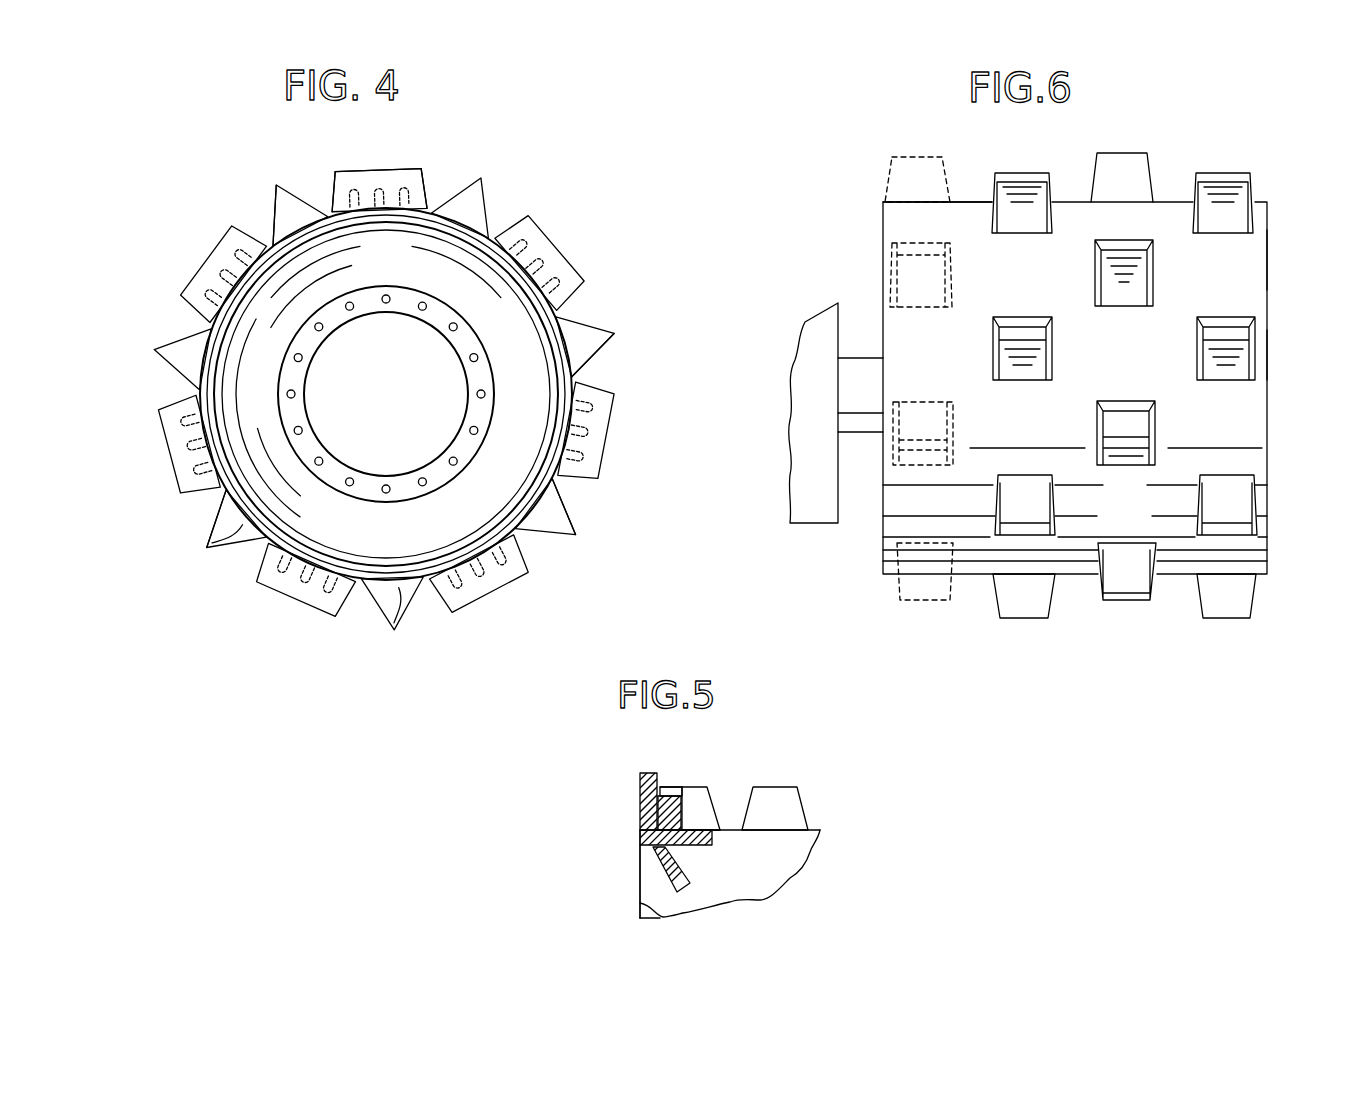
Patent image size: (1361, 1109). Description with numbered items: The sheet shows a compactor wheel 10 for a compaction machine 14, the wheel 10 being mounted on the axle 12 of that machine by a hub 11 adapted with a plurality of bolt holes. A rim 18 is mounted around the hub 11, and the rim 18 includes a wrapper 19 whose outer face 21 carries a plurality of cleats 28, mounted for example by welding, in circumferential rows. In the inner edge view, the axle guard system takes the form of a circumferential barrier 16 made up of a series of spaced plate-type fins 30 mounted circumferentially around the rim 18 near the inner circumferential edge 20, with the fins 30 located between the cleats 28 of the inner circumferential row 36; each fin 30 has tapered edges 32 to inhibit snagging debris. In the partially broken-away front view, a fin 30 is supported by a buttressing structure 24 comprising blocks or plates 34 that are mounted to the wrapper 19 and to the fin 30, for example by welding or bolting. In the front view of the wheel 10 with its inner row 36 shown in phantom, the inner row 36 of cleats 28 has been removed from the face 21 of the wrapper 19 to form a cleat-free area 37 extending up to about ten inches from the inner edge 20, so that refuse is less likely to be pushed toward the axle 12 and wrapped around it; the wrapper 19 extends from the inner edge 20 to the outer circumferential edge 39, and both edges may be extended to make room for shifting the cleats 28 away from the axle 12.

In FIG. 4, the compactor wheel 10 is at (585, 535).
In FIG. 5, the compactor wheel 10 is at (780, 777).
In FIG. 6, the compactor wheel 10 is at (1266, 578).
In FIG. 4, the hub 11 is at (432, 466).
In FIG. 6, the axle 12 is at (858, 436).
In FIG. 6, the compaction machine 14 is at (825, 318).
In FIG. 4, the circumferential barrier 16 is at (425, 150).
In FIG. 5, the circumferential barrier 16 is at (693, 752).
In FIG. 4, the rim 18 is at (385, 217).
In FIG. 5, the rim 18 is at (640, 860).
In FIG. 4, the wrapper 19 is at (235, 510).
In FIG. 5, the wrapper 19 is at (697, 840).
In FIG. 6, the wrapper 19 is at (1268, 258).
In FIG. 4, the inner circumferential edge 20 is at (197, 318).
In FIG. 5, the inner circumferential edge 20 is at (640, 836).
In FIG. 6, the inner circumferential edge 20 is at (882, 200).
In FIG. 4, the outer face 21 is at (218, 490).
In FIG. 5, the outer face 21 is at (741, 893).
In FIG. 6, the outer face 21 is at (1110, 511).
In FIG. 5, the buttressing structure 24 is at (683, 785).
In FIG. 4, the cleats 28 is at (478, 190).
In FIG. 5, the cleats 28 is at (745, 803).
In FIG. 6, the cleats 28 is at (1028, 187).
In FIG. 4, the plate-type barriers or fins 30 is at (347, 170).
In FIG. 5, the plate-type barriers or fins 30 is at (640, 773).
In FIG. 4, the tapered edges 32 is at (330, 183).
In FIG. 4, the blocks or plates 34 is at (353, 190).
In FIG. 5, the blocks or plates 34 is at (668, 795).
In FIG. 4, the inner circumferential row 36 is at (265, 215).
In FIG. 5, the inner circumferential row 36 is at (703, 817).
In FIG. 6, the inner circumferential row 36 is at (918, 165).
In FIG. 6, the cleat-free area 37 is at (921, 366).
In FIG. 6, the outer circumferential edge 39 is at (1268, 352).